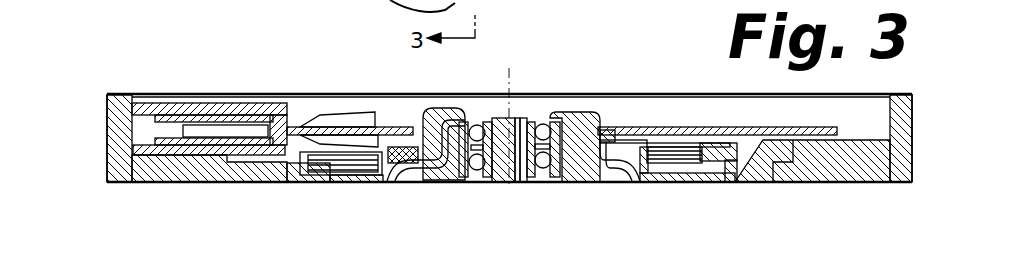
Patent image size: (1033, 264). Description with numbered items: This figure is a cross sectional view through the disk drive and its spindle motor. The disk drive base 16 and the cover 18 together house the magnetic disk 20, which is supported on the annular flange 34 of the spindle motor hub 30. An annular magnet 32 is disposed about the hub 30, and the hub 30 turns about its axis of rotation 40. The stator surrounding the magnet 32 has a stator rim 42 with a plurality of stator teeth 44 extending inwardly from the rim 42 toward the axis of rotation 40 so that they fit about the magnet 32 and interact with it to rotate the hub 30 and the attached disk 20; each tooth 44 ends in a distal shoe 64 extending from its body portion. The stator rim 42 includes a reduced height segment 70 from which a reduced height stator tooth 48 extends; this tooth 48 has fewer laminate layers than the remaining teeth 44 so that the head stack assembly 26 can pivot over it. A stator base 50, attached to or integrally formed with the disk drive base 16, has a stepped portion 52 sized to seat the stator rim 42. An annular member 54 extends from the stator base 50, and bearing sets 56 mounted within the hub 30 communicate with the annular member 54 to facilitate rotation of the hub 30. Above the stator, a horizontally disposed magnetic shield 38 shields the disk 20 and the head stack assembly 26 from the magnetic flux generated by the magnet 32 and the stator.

The disk drive base 16 is at (873, 183).
The cover 18 is at (592, 93).
The magnetic disk 20 is at (642, 126).
The head stack assembly 26 is at (225, 118).
The spindle motor hub 30 is at (532, 93).
The annular magnet 32 is at (393, 185).
The annular flange 34 is at (383, 112).
The magnetic shield 38 is at (685, 139).
The axis of rotation 40 is at (508, 83).
The stator rim 42 is at (720, 179).
The stator teeth 44 is at (673, 179).
The reduced height stator tooth 48 is at (322, 185).
The stator base 50 is at (760, 183).
The stepped portion 52 is at (731, 181).
The annular member 54 is at (573, 181).
The bearing sets 56 is at (524, 125).
The distal shoe 64 is at (628, 179).
The reduced height segment 70 is at (267, 185).